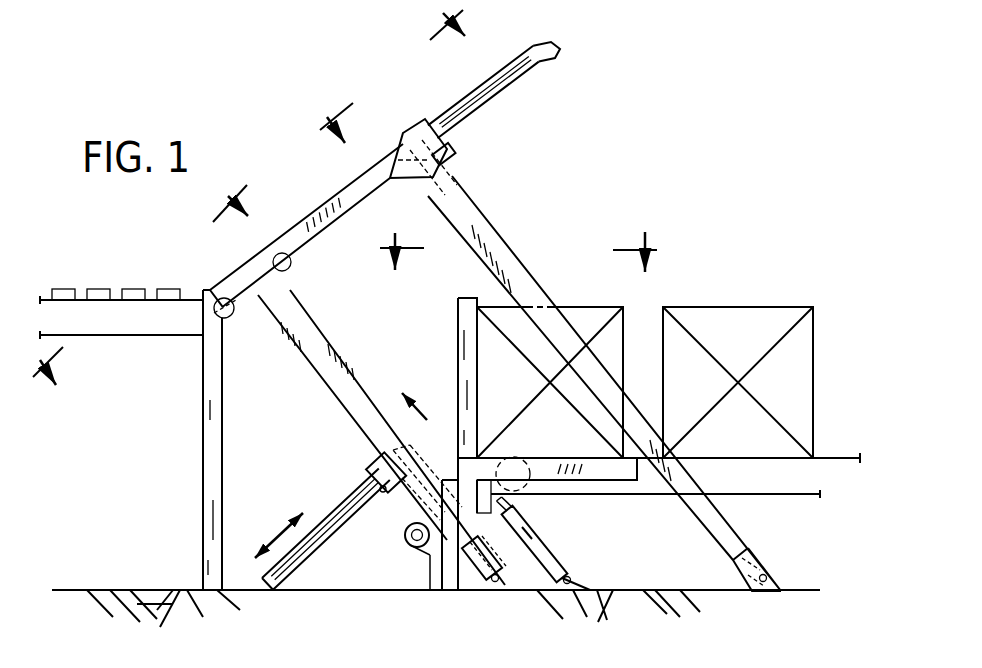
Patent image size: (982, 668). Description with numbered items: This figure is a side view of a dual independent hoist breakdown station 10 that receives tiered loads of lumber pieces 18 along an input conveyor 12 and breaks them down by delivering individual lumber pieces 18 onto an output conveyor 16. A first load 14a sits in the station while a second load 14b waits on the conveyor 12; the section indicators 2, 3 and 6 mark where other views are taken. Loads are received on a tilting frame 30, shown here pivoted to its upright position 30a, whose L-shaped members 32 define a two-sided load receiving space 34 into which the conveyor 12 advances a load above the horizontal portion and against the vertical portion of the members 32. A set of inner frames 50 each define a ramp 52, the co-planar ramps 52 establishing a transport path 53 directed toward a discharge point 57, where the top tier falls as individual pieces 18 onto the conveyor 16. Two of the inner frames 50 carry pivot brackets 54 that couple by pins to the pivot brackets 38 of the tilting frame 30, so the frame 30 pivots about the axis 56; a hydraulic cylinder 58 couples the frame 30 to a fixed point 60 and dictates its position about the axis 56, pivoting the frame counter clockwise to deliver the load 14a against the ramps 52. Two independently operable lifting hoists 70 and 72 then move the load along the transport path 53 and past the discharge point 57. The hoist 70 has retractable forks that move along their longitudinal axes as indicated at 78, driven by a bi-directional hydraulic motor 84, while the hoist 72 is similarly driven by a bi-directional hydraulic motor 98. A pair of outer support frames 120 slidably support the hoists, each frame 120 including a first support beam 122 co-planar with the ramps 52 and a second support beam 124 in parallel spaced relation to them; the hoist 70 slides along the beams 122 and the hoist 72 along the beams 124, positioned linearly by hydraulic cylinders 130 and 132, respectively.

The section line 2- 2 is at (133, 274).
The section line 3- 3 is at (382, 71).
The section line 6- 6 is at (522, 244).
The dual independent hoist breakdown station 10 is at (581, 130).
The input conveyor 12 is at (867, 382).
The load 14a is at (587, 307).
The load 14b is at (756, 307).
The output conveyor 16 is at (42, 298).
The lumber pieces 18 is at (143, 274).
The tilting frame 30 is at (612, 496).
The upright position 30a is at (456, 330).
The L-shaped members 32 is at (505, 457).
The load receiving space 34 is at (556, 264).
The pivot brackets 38 is at (428, 578).
The inner frames 50 is at (292, 298).
The ramp 52 is at (354, 365).
The transport path 53 is at (424, 420).
The pivot brackets 54 is at (412, 512).
The axis 56 is at (428, 548).
The discharge point 57 is at (283, 270).
The hydraulic cylinder 58 is at (538, 534).
The fixed point 60 is at (578, 579).
The lifting hoist 70 is at (340, 470).
The lifting hoist 72 is at (413, 113).
The fork movement direction 78 is at (278, 537).
The bi-directional hydraulic motor 84 is at (378, 512).
The bi-directional hydraulic motor 98 is at (452, 148).
The outer support frames 120 is at (303, 198).
The first support beam 122 is at (322, 398).
The second support beam 124 is at (467, 216).
The hydraulic cylinder 130 is at (482, 582).
The hydraulic cylinder 132 is at (748, 572).